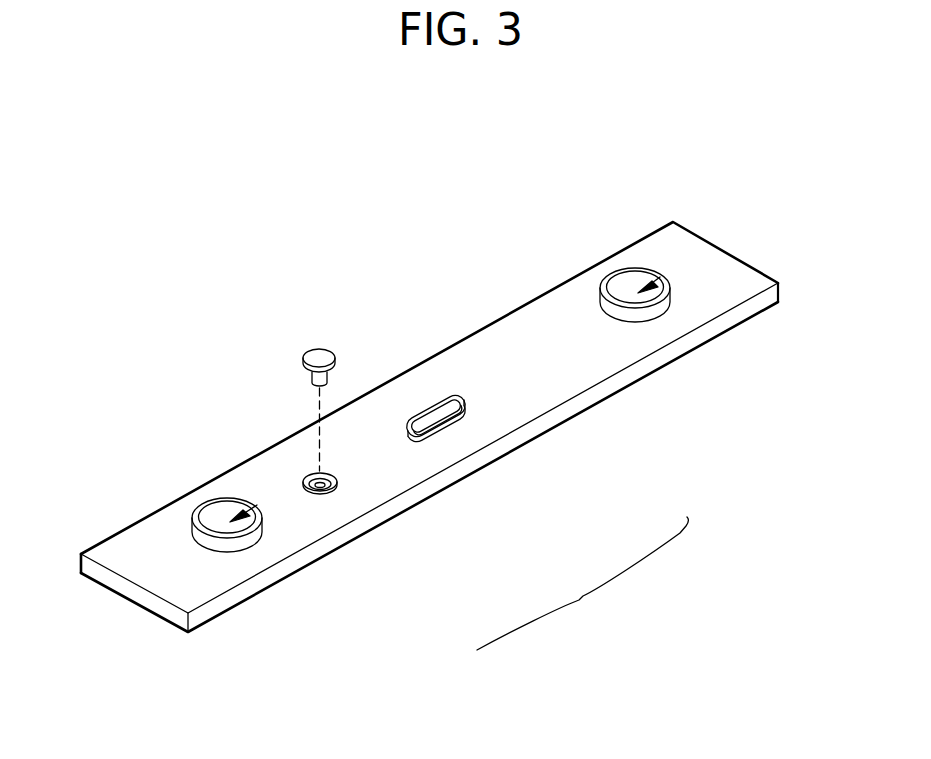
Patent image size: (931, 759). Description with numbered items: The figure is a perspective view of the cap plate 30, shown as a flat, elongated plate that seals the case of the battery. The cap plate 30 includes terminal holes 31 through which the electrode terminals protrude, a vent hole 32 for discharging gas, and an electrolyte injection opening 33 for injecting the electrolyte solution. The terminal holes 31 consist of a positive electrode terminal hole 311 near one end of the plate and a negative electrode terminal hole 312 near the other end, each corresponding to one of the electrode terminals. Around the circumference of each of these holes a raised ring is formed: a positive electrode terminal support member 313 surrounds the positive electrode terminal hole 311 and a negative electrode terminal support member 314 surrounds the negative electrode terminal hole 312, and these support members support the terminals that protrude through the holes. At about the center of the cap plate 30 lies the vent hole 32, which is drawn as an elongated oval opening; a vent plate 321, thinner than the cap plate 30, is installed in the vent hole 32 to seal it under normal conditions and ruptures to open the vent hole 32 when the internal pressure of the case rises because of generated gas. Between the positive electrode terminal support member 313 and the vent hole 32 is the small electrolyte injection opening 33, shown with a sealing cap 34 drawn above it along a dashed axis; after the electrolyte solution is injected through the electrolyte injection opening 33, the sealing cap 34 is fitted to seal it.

The cap plate 30 is at (163, 495).
The terminal holes 31 is at (582, 583).
The positive electrode terminal hole 311 is at (258, 507).
The negative electrode terminal hole 312 is at (659, 274).
The positive electrode terminal support member 313 is at (217, 497).
The negative electrode terminal support member 314 is at (628, 268).
The vent hole 32 is at (450, 400).
The vent plate 321 is at (432, 425).
The electrolyte injection opening 33 is at (310, 472).
The sealing cap 34 is at (313, 358).